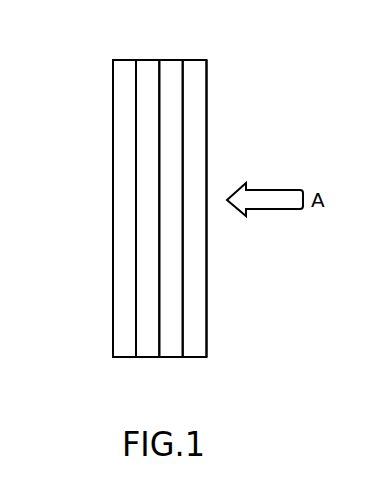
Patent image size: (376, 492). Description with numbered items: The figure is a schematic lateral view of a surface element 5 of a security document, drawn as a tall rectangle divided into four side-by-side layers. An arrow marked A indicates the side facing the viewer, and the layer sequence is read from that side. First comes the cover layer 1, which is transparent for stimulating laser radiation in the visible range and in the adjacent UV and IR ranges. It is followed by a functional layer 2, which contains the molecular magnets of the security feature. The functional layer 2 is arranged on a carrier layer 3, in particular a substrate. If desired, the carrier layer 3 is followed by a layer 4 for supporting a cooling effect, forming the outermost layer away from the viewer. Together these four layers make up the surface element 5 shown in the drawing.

The cover layer 1 is at (203, 72).
The functional layer 2 is at (172, 63).
The carrier layer 3 is at (147, 63).
The layer for supporting a cooling effect 4 is at (119, 81).
The surface element 5 is at (228, 300).